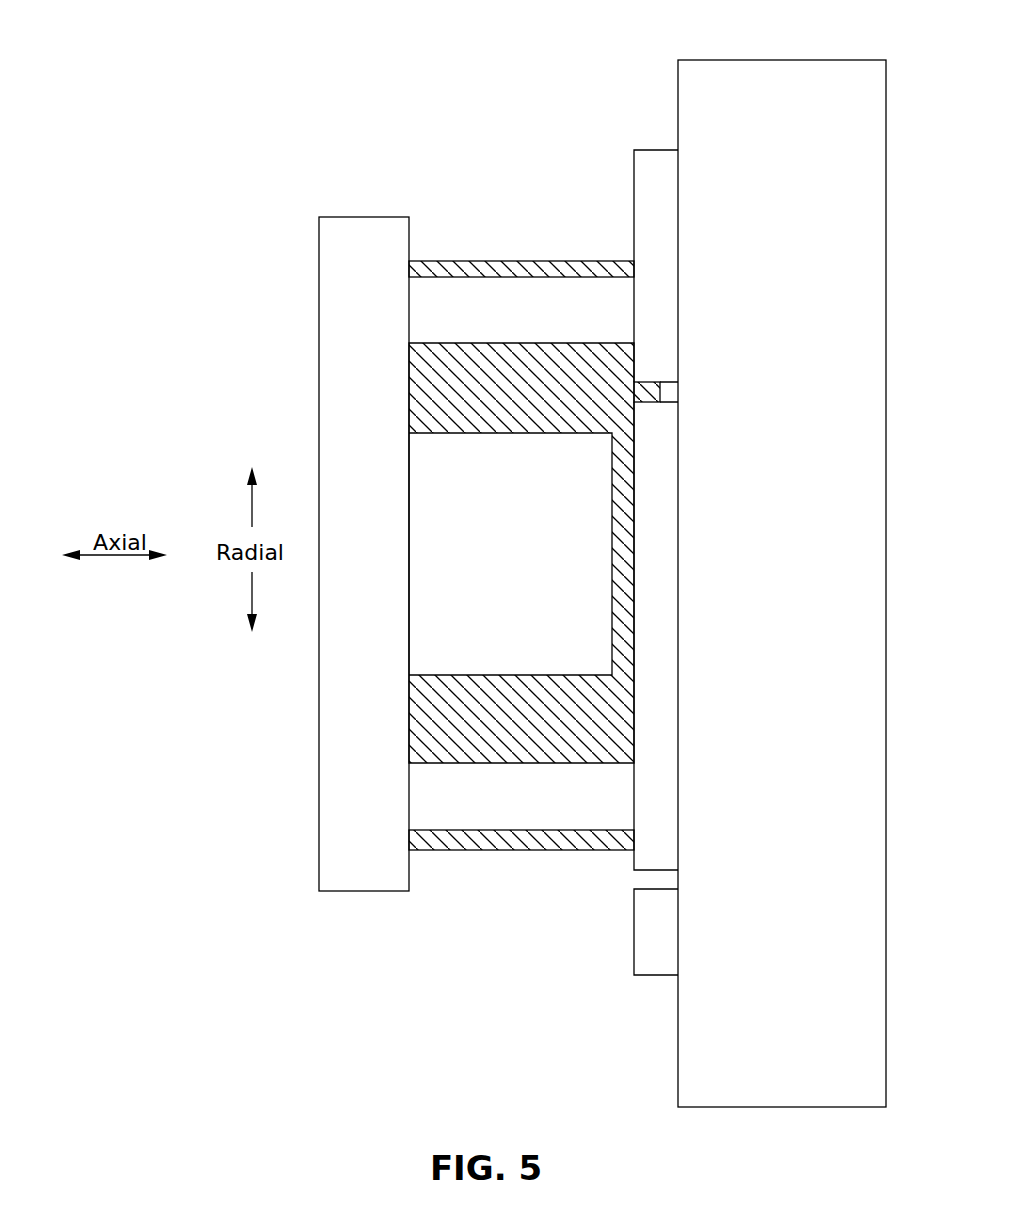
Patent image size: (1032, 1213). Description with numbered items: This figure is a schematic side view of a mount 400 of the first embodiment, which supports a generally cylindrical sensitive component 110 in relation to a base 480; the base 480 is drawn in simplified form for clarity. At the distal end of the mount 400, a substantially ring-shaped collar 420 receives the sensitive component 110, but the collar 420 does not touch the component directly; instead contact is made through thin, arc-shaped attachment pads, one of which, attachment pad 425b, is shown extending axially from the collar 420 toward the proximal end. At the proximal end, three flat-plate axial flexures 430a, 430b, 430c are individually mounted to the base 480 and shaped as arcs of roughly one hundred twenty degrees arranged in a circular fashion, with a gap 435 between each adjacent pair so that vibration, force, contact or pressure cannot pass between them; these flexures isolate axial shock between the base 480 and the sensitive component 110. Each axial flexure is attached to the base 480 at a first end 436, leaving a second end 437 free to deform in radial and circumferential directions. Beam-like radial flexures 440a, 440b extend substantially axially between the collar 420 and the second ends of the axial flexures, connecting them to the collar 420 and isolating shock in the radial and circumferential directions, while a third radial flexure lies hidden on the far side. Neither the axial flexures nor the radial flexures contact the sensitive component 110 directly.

The mount 400 is at (223, 98).
The sensitive component 110 is at (473, 268).
The collar 420 is at (353, 403).
The attachment pad 425b is at (485, 565).
The axial flexure 430a is at (663, 242).
The axial flexure 430b is at (659, 496).
The axial flexure 430c is at (660, 955).
The gap 435 is at (705, 393).
The first end 436 is at (723, 438).
The second end 437 is at (715, 827).
The radial flexure 440a is at (554, 308).
The radial flexure 440b is at (516, 810).
The base 480 is at (750, 77).